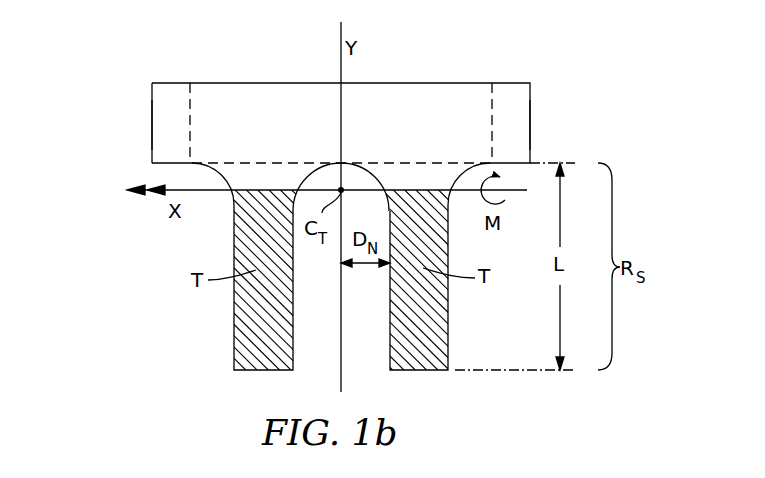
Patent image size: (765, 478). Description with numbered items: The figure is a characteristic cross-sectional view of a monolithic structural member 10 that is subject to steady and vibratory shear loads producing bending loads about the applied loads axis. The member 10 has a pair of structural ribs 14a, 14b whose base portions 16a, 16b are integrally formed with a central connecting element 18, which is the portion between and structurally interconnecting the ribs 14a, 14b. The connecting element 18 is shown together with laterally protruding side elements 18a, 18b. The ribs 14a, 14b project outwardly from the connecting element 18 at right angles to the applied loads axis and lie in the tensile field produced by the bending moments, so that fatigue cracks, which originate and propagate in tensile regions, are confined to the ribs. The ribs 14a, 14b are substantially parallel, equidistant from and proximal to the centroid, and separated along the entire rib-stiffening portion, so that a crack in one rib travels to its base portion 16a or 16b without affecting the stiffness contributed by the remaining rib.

The monolithic structural member 10 is at (331, 198).
The central connecting element 18 is at (342, 104).
The laterally protruding side element 18a is at (532, 93).
The laterally protruding side element 18b is at (163, 120).
The base portion 16a is at (451, 158).
The base portion 16b is at (249, 164).
The structural rib 14a is at (428, 333).
The structural rib 14b is at (248, 335).